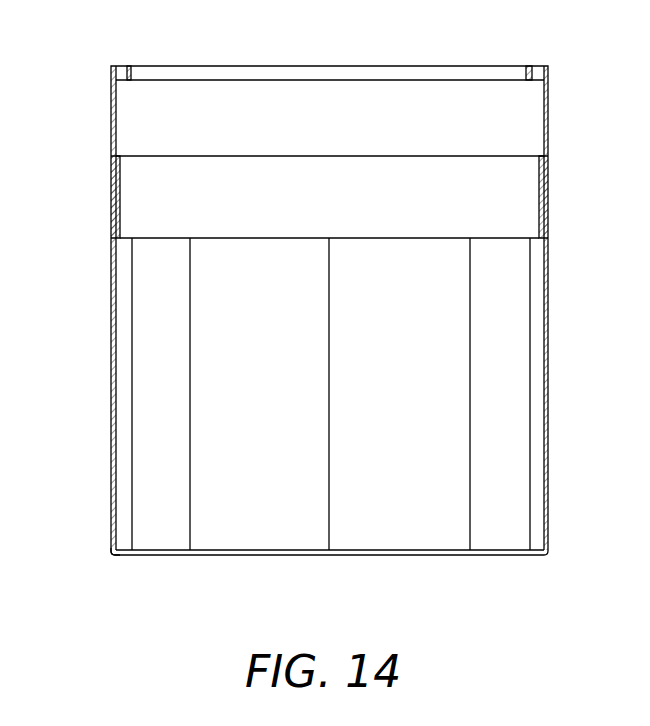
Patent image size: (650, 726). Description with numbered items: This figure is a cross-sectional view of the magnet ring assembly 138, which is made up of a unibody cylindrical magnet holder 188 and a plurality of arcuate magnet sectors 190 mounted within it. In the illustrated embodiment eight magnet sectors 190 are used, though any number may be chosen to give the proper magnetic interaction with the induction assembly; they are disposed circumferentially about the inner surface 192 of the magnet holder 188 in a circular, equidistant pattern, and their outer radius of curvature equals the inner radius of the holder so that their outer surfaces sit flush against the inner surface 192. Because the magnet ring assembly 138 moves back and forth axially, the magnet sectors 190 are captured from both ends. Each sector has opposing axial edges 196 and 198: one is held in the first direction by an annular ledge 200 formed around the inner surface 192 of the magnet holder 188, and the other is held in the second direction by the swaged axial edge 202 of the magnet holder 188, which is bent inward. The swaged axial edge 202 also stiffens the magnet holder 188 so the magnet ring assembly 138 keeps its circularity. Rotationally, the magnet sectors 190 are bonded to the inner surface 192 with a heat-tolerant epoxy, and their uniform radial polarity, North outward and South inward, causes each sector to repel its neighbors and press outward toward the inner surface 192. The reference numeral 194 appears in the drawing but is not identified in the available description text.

The magnet ring assembly 138 is at (437, 40).
The magnet holder 188 is at (111, 336).
The magnet sectors 190 is at (395, 520).
The inner surface 192 is at (111, 278).
The intermediate plate 194 is at (111, 390).
The axial edge 196 is at (258, 237).
The axial edge 198 is at (165, 551).
The annular ledge 200 is at (111, 228).
The swaged axial edge 202 is at (116, 556).